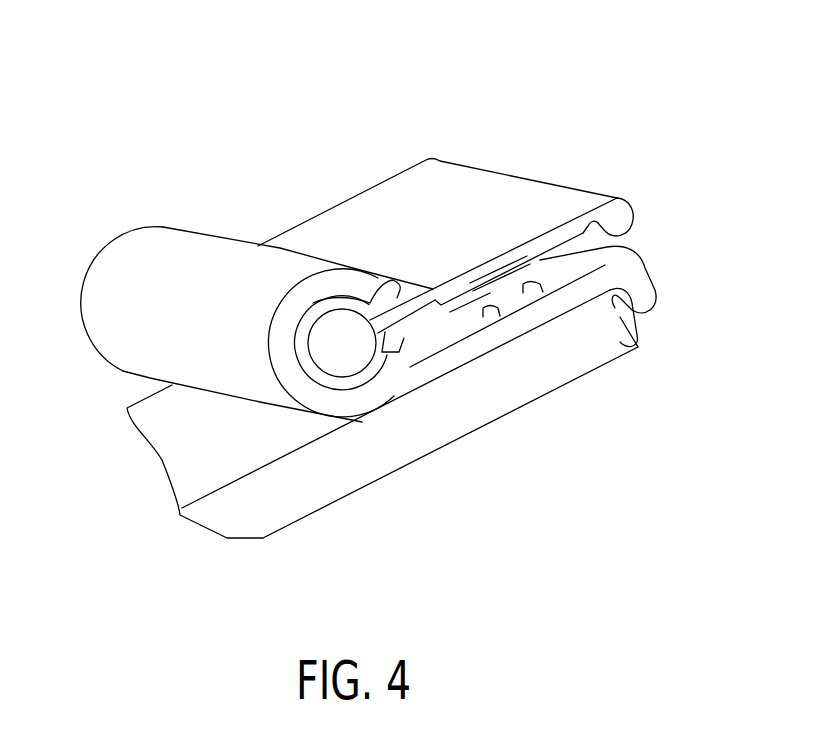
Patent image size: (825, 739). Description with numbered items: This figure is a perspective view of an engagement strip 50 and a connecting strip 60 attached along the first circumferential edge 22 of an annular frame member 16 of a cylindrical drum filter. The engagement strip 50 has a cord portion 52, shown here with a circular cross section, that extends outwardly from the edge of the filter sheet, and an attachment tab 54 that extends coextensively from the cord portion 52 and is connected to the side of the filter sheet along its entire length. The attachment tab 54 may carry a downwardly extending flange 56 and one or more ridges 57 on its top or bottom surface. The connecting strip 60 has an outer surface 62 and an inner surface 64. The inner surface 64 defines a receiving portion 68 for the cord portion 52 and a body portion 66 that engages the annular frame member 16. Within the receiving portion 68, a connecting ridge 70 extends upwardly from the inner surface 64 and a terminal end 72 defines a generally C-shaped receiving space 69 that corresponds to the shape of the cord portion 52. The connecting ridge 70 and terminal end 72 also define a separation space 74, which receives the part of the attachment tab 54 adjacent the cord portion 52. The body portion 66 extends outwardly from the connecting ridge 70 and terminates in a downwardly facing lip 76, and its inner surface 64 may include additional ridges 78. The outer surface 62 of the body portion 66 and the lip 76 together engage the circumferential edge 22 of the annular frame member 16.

The annular frame member 16 is at (278, 500).
The first circumferential edge 22 is at (633, 337).
The engagement strip 50 is at (408, 204).
The cord portion 52 is at (345, 343).
The attachment tab 54 is at (510, 207).
The downwardly extending flange 56 is at (620, 220).
The ridges 57 is at (410, 287).
The connecting strip 60 is at (172, 279).
The outer surface 62 is at (103, 283).
The inner surface 64 is at (468, 302).
The body portion 66 is at (540, 287).
The receiving portion 68 is at (353, 387).
The C-shaped receiving space 69 is at (303, 333).
The connecting ridge 70 is at (437, 303).
The terminal end 72 is at (383, 287).
The separation space 74 is at (427, 282).
The downwardly facing lip 76 is at (643, 292).
The additional ridges 78 is at (545, 280).